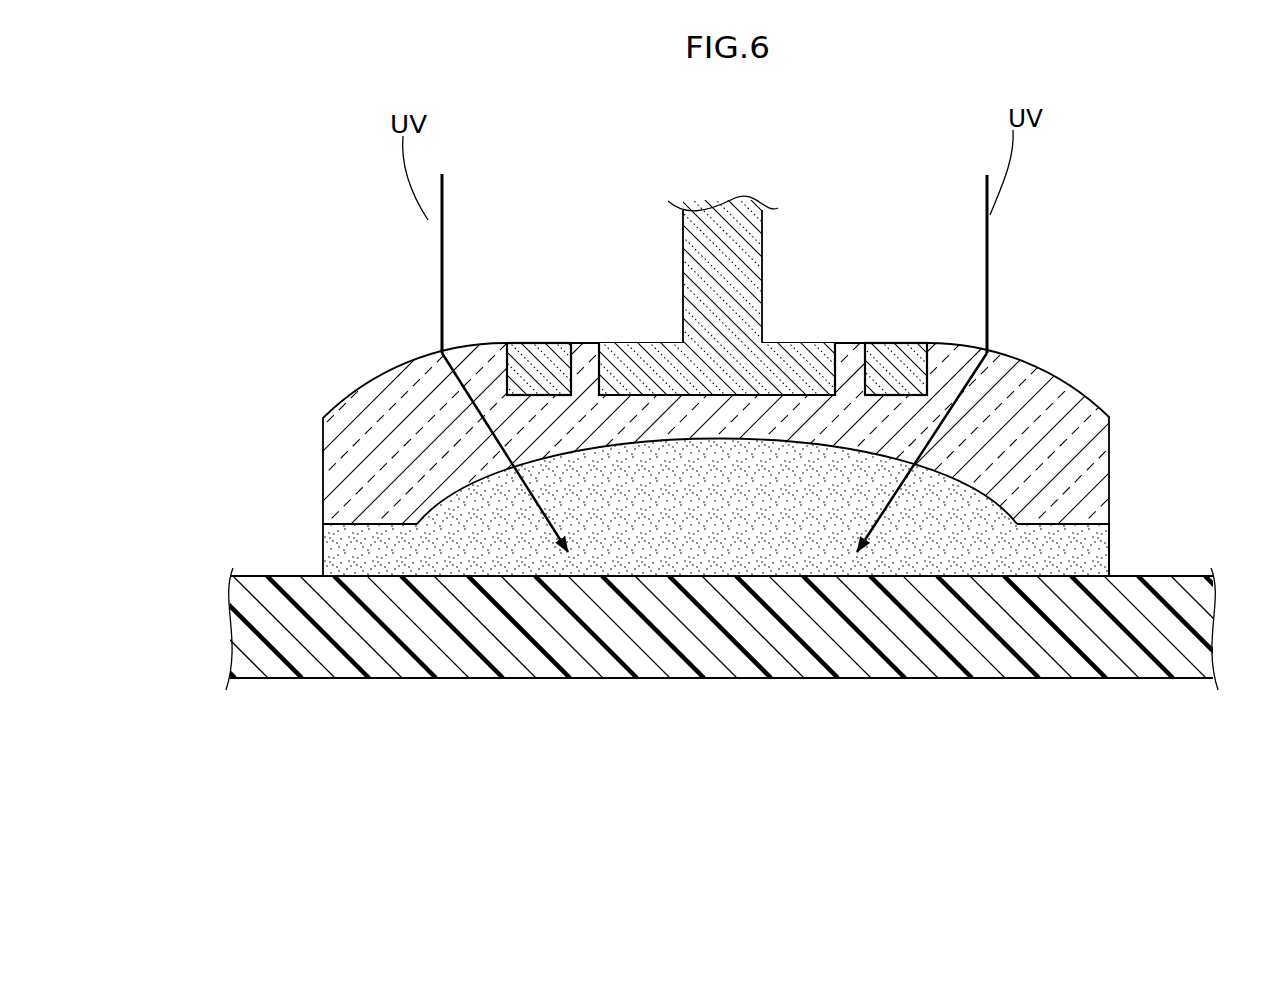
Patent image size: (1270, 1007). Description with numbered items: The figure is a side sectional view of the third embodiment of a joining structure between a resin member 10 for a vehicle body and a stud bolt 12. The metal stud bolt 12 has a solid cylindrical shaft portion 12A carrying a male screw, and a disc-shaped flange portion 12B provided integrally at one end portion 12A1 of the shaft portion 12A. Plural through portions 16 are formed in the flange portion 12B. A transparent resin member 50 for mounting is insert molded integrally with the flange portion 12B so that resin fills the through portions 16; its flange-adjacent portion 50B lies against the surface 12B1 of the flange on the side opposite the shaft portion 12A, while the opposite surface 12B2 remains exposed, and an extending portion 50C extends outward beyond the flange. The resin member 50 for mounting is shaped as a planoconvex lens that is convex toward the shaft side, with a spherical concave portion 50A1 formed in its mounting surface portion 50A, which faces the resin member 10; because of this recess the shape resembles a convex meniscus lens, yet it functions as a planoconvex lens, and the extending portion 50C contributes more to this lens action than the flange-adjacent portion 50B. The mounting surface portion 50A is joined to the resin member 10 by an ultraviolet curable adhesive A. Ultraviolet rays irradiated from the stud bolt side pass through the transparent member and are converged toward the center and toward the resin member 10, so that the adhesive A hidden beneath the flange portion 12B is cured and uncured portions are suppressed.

The resin member for a vehicle body 10 is at (1025, 680).
The stud bolt 12 is at (767, 264).
The shaft portion 12A is at (765, 269).
The one end portion 12A1 is at (746, 318).
The flange portion 12B is at (726, 321).
The surface 12B1 is at (552, 396).
The surface 12B2 is at (632, 344).
The through portions 16 is at (576, 344).
The resin member for mounting 50 is at (695, 436).
The mounting surface portion 50A is at (352, 531).
The spherical concave portion 50A1 is at (988, 510).
The flange-adjacent portion 50B is at (746, 441).
The extending portion 50C is at (1020, 430).
The ultraviolet curable adhesive A is at (1110, 545).